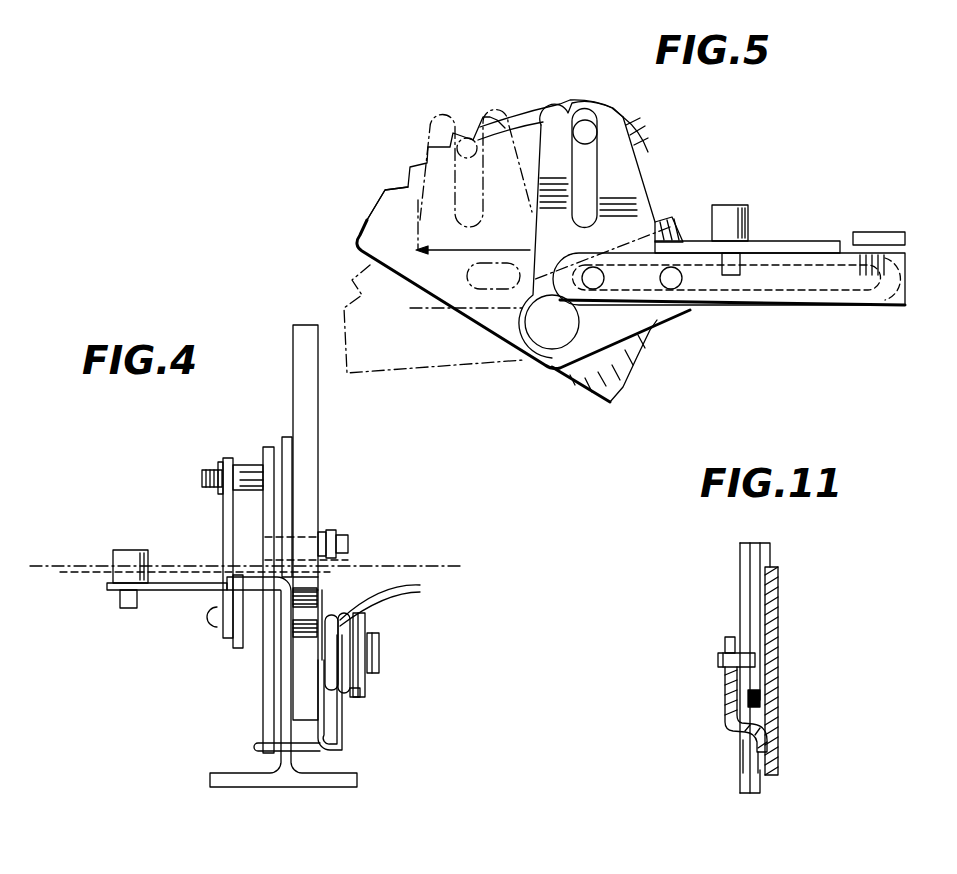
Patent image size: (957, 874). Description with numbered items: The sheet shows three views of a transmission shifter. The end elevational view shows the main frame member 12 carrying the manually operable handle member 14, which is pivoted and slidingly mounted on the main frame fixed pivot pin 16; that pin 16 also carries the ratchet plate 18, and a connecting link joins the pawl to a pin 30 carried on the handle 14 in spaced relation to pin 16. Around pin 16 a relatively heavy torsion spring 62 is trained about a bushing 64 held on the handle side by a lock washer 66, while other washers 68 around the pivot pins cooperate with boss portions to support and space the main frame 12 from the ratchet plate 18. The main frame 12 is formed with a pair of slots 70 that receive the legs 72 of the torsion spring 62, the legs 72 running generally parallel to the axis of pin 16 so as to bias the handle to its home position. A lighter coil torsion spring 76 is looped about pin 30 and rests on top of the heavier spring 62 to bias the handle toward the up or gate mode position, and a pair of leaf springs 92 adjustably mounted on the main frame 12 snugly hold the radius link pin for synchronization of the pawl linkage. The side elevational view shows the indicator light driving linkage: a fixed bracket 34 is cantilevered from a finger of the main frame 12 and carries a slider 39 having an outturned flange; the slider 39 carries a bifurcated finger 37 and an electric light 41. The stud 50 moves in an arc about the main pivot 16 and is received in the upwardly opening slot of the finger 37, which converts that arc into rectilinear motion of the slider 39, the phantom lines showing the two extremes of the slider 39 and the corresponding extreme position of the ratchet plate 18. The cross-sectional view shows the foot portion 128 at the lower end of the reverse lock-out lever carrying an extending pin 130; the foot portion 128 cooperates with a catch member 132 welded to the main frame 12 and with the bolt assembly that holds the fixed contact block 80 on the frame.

In FIG. 4, the main frame member 12 is at (318, 788).
In FIG. 11, the main frame member 12 is at (772, 628).
In FIG. 4, the manually operable handle member 14 is at (312, 466).
In FIG. 5, the main frame fixed pivot pin 16 is at (545, 336).
In FIG. 4, the main frame fixed pivot pin 16 is at (380, 656).
In FIG. 5, the ratchet plate 18 is at (362, 292).
In FIG. 4, the ratchet plate 18 is at (266, 447).
In FIG. 4, the pin on handle 30 is at (340, 531).
In FIG. 5, the fixed bracket 34 is at (897, 310).
In FIG. 5, the bifurcated finger 37 is at (622, 168).
In FIG. 4, the bifurcated finger 37 is at (223, 518).
In FIG. 5, the slider 39 is at (790, 241).
In FIG. 4, the slider 39 is at (165, 594).
In FIG. 5, the electric light 41 is at (729, 205).
In FIG. 4, the electric light 41 is at (128, 550).
In FIG. 5, the stud 50 is at (586, 118).
In FIG. 4, the stud 50 is at (245, 466).
In FIG. 4, the torsion spring 62 is at (345, 695).
In FIG. 4, the bushing 64 is at (366, 632).
In FIG. 4, the lock washer 66 is at (362, 690).
In FIG. 4, the washers 68 is at (345, 617).
In FIG. 4, the slots 70 is at (303, 728).
In FIG. 4, the legs of torsion spring 72 is at (320, 762).
In FIG. 4, the coil torsion spring 76 is at (322, 596).
In FIG. 11, the fixed contact block 80 is at (750, 762).
In FIG. 4, the leaf springs 92 is at (393, 601).
In FIG. 11, the foot portion 128 is at (753, 598).
In FIG. 11, the pin 130 is at (718, 660).
In FIG. 11, the catch member 132 is at (727, 722).